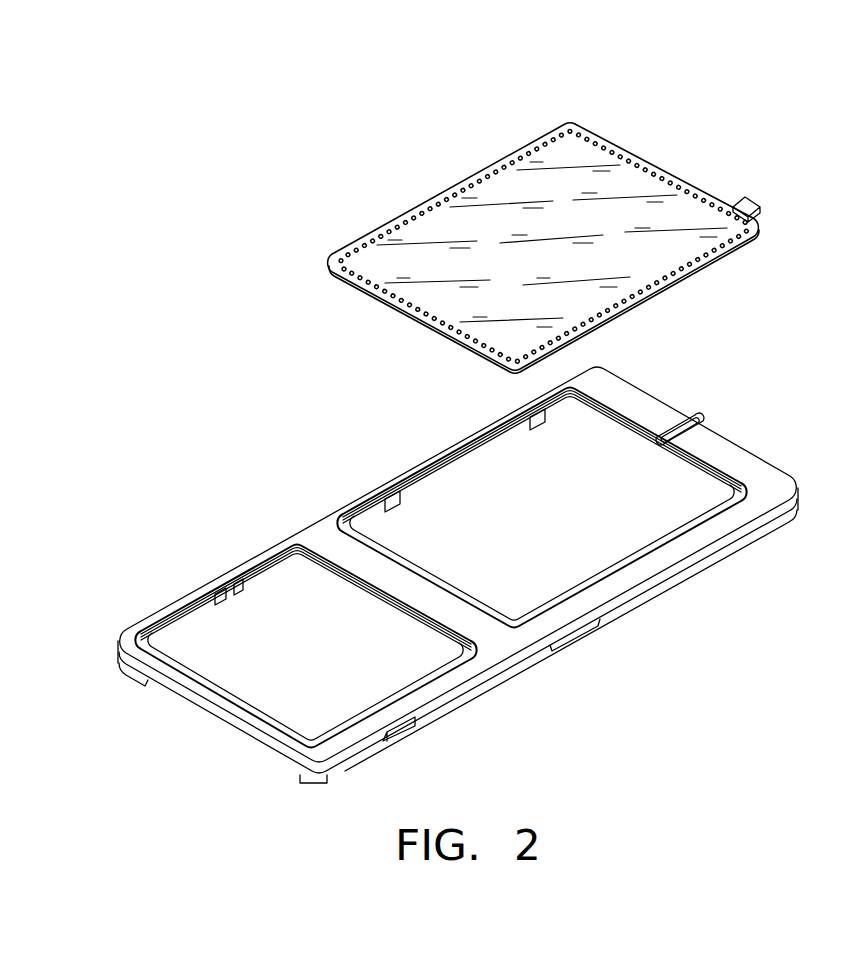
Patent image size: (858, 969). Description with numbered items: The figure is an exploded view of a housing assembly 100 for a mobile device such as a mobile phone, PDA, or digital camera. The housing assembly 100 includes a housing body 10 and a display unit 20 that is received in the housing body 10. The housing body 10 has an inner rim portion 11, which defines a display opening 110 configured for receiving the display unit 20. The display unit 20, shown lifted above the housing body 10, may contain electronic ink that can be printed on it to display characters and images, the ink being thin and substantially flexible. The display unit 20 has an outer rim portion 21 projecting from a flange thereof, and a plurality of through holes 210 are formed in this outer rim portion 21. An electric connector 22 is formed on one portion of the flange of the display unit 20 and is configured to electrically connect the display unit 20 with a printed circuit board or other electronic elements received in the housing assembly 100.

The housing assembly 100 is at (500, 89).
The housing body 10 is at (725, 458).
The inner rim portion 11 is at (693, 523).
The display opening 110 is at (583, 530).
The display unit 20 is at (687, 210).
The outer rim portion 21 is at (618, 147).
The through holes 210 is at (641, 154).
The electric connector 22 is at (751, 199).